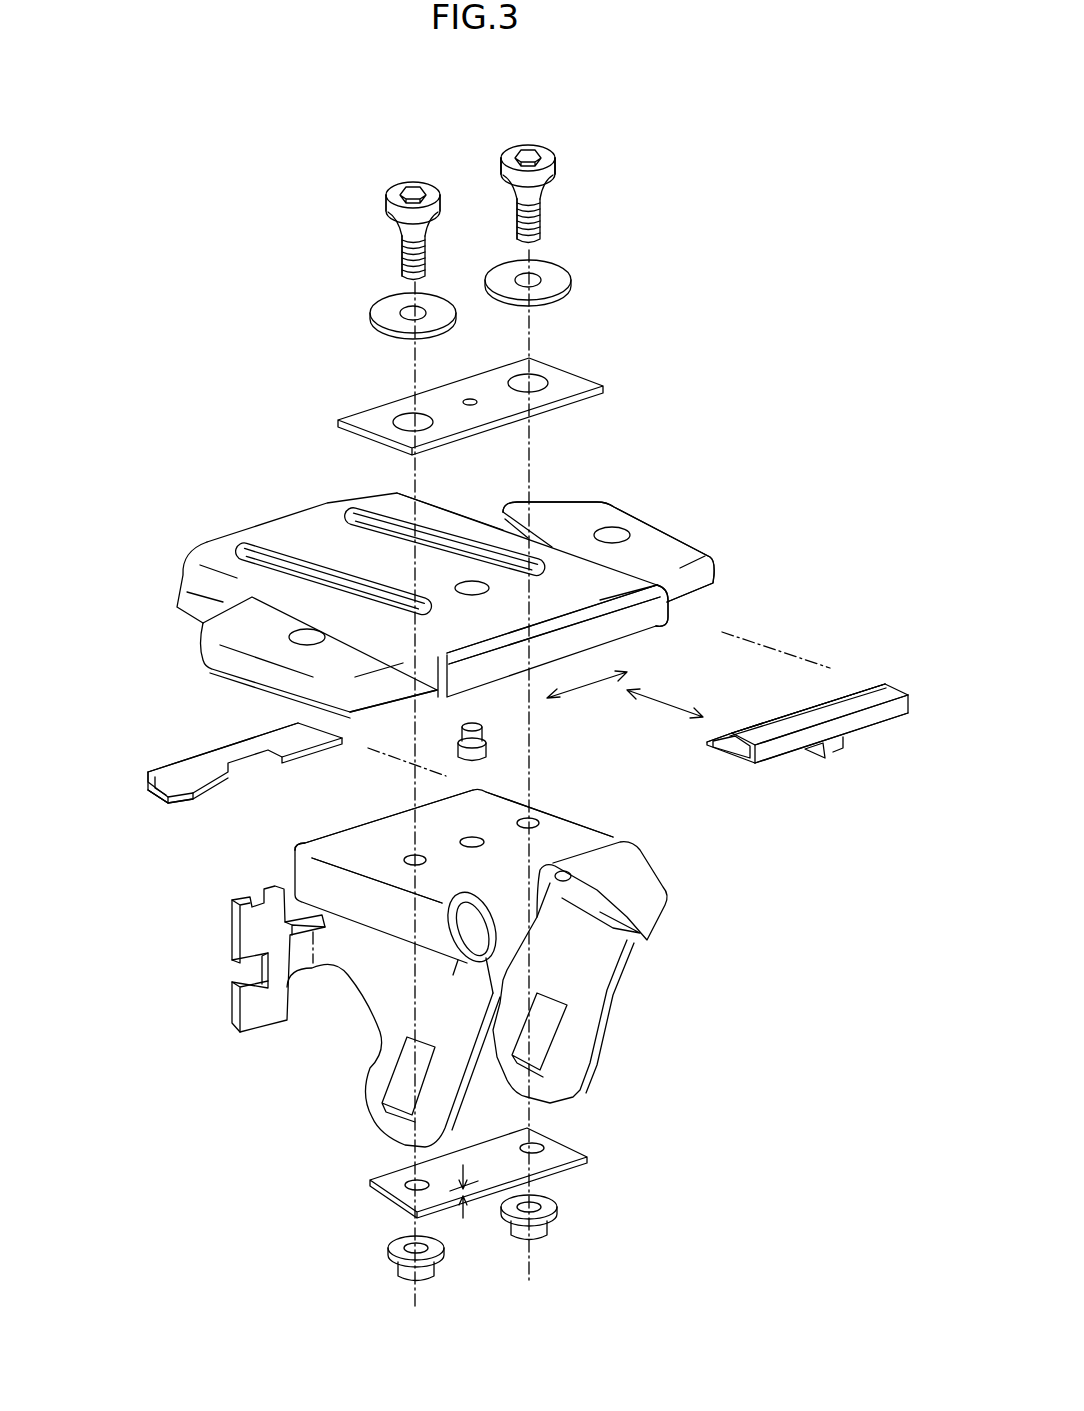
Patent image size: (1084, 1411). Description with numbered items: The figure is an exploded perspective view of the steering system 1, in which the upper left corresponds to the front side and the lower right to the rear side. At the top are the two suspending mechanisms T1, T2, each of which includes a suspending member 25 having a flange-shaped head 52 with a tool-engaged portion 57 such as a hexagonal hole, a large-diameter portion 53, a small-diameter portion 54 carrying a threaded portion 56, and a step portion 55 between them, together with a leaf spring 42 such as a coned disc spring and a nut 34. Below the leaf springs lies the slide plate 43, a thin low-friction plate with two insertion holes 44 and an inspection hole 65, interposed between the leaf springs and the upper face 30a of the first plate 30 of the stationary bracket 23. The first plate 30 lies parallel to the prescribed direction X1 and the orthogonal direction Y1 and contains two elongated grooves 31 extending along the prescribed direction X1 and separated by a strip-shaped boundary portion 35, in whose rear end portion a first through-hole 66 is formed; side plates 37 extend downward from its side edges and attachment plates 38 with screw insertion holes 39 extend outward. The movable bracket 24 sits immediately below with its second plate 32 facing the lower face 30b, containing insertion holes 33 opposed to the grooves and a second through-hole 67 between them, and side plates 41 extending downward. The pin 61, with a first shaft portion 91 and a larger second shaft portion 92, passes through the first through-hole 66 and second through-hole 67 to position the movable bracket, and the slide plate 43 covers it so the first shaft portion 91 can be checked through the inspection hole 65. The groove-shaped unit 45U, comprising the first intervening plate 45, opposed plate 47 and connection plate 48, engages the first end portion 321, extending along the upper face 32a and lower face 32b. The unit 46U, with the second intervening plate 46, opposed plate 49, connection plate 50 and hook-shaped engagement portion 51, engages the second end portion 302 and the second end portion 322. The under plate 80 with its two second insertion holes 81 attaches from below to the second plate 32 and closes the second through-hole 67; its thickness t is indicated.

The steering system 1 is at (760, 142).
The suspending mechanism T1 is at (396, 184).
The suspending mechanism T2 is at (510, 144).
The suspending member 25 is at (430, 184).
The head 52 is at (386, 198).
The large-diameter portion 53 is at (392, 218).
The small-diameter portion 54 is at (401, 244).
The step portion 55 is at (428, 232).
The threaded portion 56 is at (401, 265).
The tool-engaged portion 57 is at (414, 182).
The leaf spring 42 is at (382, 314).
The slide plate 43 is at (576, 383).
The insertion holes 44 is at (406, 418).
The inspection hole 65 is at (470, 399).
The first plate 30 is at (341, 542).
The upper face 30a is at (434, 570).
The lower face 30b is at (615, 606).
The second end portion 302 is at (500, 660).
The elongated grooves 31 is at (284, 565).
The first through-hole 66 is at (474, 583).
The stationary bracket 23 is at (565, 570).
The screw insertion holes 39 is at (614, 530).
The attachment plates 38 is at (251, 625).
The side plates 37 is at (186, 602).
The boundary portion 35 is at (398, 690).
The orthogonal direction Y1 is at (583, 682).
The prescribed direction X1 is at (682, 702).
The pin 61 is at (596, 700).
The first shaft portion 91 is at (484, 730).
The second shaft portion 92 is at (489, 747).
The first intervening plate 45 is at (213, 760).
The groove-shaped unit 45U is at (186, 745).
The connection plate 48 is at (148, 785).
The opposed plate 47 is at (153, 802).
The second intervening plate 46 is at (724, 745).
The unit 46U is at (870, 690).
The opposed plate 49 is at (790, 713).
The connection plate 50 is at (785, 765).
The engagement portion 51 is at (840, 752).
The second plate 32 is at (558, 838).
The movable bracket 24 is at (600, 814).
The first end portion 321 is at (333, 840).
The upper face 32a is at (395, 816).
The lower face 32b is at (474, 920).
The insertion holes 33 is at (419, 856).
The second through-hole 67 is at (474, 840).
The second end portion 322 is at (580, 865).
The side plates 41 is at (380, 970).
The under plate 80 is at (590, 1158).
The second insertion holes 81 is at (396, 1185).
The thickness t is at (469, 1181).
The nut 34 is at (440, 1270).